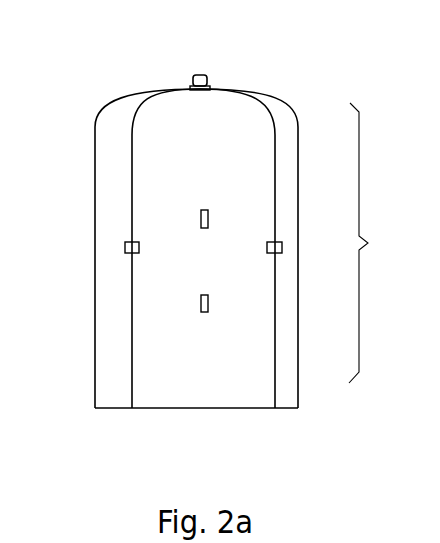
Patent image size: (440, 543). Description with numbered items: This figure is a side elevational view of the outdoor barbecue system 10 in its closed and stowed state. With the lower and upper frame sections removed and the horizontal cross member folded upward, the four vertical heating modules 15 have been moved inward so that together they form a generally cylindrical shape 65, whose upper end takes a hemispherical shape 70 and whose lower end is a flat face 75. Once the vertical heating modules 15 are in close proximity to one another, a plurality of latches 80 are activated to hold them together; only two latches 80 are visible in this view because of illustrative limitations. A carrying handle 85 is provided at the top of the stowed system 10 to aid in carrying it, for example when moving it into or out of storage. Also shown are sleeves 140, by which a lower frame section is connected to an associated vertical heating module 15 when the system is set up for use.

The outdoor barbecue system 10 is at (82, 402).
The vertical heating module 15 is at (110, 158).
The generally cylindrical shape 65 is at (375, 243).
The hemispherical shape 70 is at (117, 110).
The flat face 75 is at (157, 411).
The latch 80 is at (125, 247).
The carrying handle 85 is at (195, 75).
The sleeve 140 is at (200, 219).